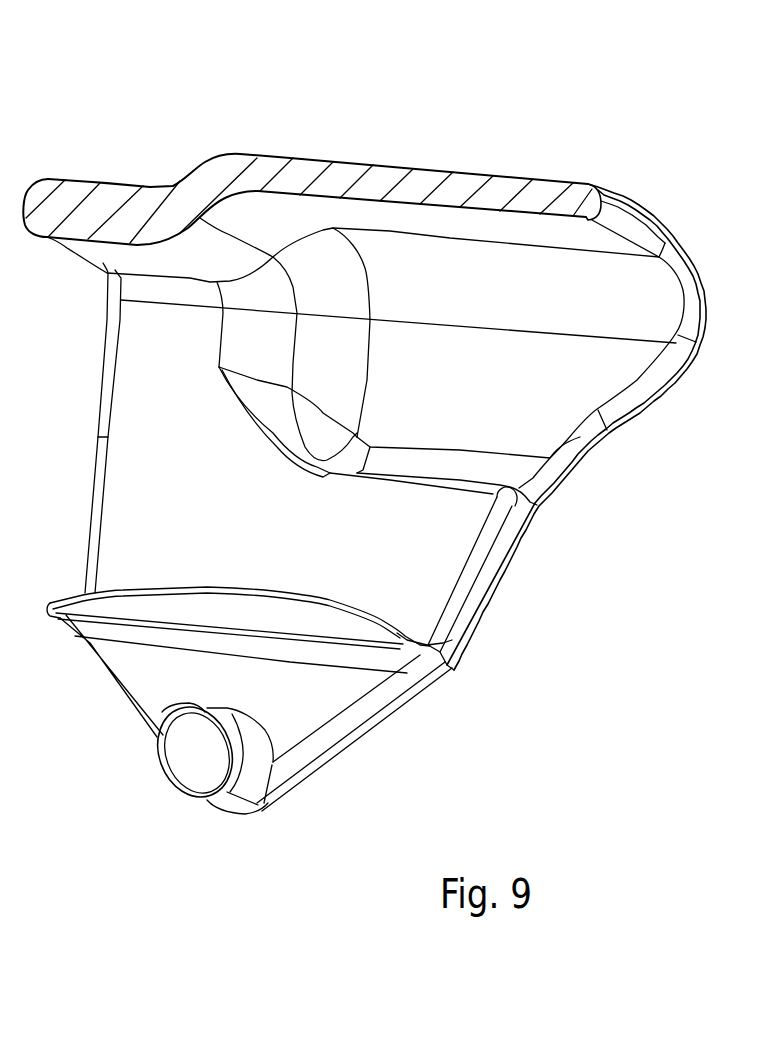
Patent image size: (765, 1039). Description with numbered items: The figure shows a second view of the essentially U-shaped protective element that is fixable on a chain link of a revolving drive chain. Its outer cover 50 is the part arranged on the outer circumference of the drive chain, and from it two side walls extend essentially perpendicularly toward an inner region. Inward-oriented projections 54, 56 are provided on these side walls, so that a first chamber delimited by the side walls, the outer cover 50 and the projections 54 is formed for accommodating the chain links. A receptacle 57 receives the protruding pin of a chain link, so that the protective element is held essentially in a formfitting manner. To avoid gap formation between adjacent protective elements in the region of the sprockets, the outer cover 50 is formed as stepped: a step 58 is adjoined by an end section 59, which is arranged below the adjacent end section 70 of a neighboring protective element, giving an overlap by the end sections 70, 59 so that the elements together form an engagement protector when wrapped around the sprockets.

The outer cover 50 is at (412, 192).
The step 58 is at (190, 200).
The end section 59 is at (93, 212).
The adjacent end section 70 is at (568, 205).
The receptacle 57 is at (500, 375).
The projection 54 is at (190, 601).
The projection 56 is at (220, 745).